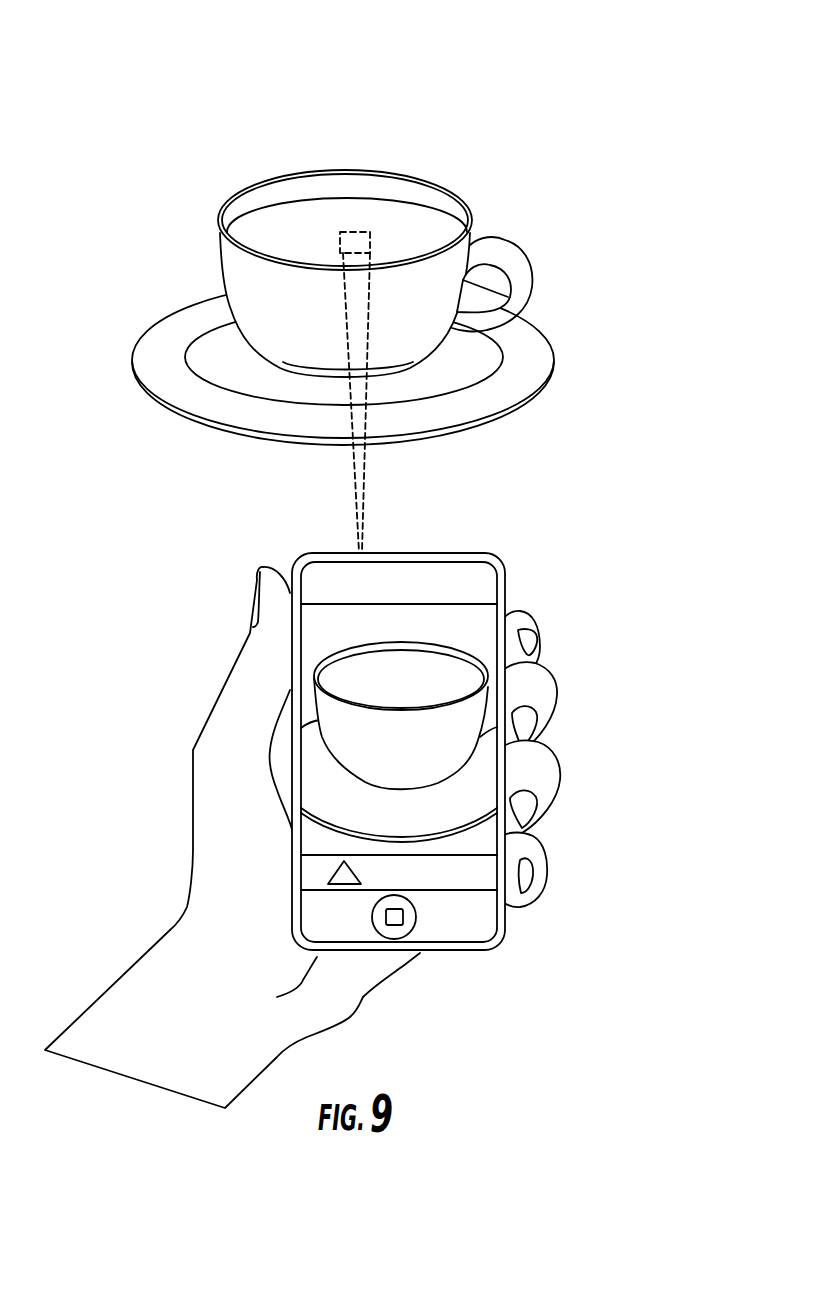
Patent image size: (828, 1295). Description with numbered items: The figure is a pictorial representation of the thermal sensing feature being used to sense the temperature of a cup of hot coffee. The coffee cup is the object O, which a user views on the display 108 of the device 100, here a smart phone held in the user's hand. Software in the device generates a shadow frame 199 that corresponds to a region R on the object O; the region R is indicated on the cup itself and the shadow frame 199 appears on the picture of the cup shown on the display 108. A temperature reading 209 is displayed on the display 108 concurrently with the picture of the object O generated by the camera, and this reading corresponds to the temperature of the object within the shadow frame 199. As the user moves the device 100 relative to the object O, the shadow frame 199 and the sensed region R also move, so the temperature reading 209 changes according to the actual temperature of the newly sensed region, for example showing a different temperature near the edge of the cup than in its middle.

The object O is at (485, 112).
The region R is at (357, 232).
The device 100 is at (520, 592).
The display 108 is at (374, 773).
The shadow frame 199 is at (360, 684).
The temperature reading 209 is at (457, 870).